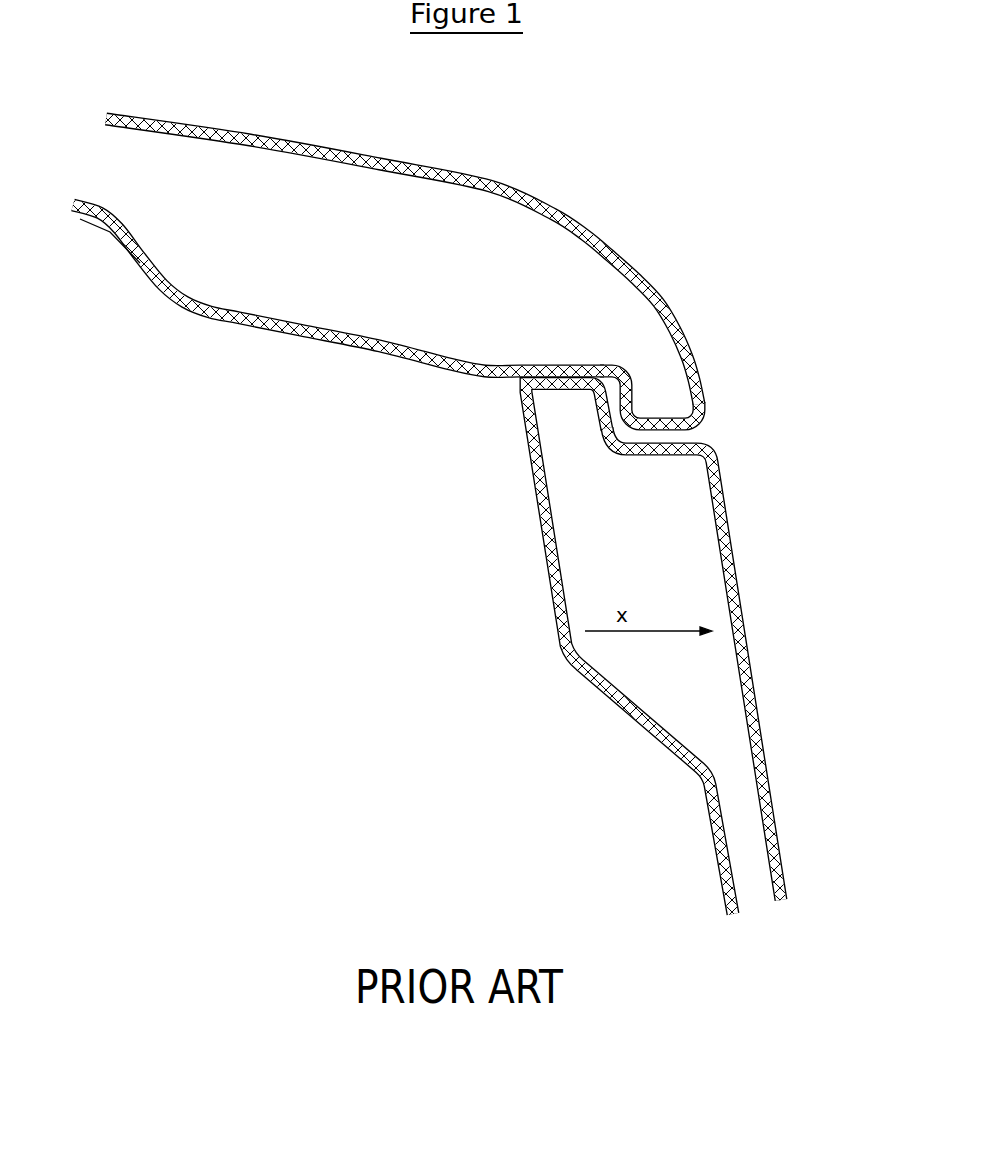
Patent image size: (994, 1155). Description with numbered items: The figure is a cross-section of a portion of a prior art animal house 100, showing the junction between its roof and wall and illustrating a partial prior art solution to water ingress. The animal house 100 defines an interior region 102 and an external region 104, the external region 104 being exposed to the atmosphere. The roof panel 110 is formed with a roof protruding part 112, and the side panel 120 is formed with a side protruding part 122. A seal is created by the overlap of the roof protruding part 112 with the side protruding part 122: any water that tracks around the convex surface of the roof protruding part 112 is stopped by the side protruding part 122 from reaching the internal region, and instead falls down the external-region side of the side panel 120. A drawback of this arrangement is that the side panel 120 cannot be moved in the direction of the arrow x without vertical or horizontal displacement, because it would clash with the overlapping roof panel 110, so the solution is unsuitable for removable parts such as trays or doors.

The animal house 100 is at (448, 503).
The interior region 102 is at (240, 480).
The external region 104 is at (877, 493).
The roof panel 110 is at (565, 258).
The roof protruding part 112 is at (658, 391).
The side panel 120 is at (673, 568).
The side protruding part 122 is at (563, 423).